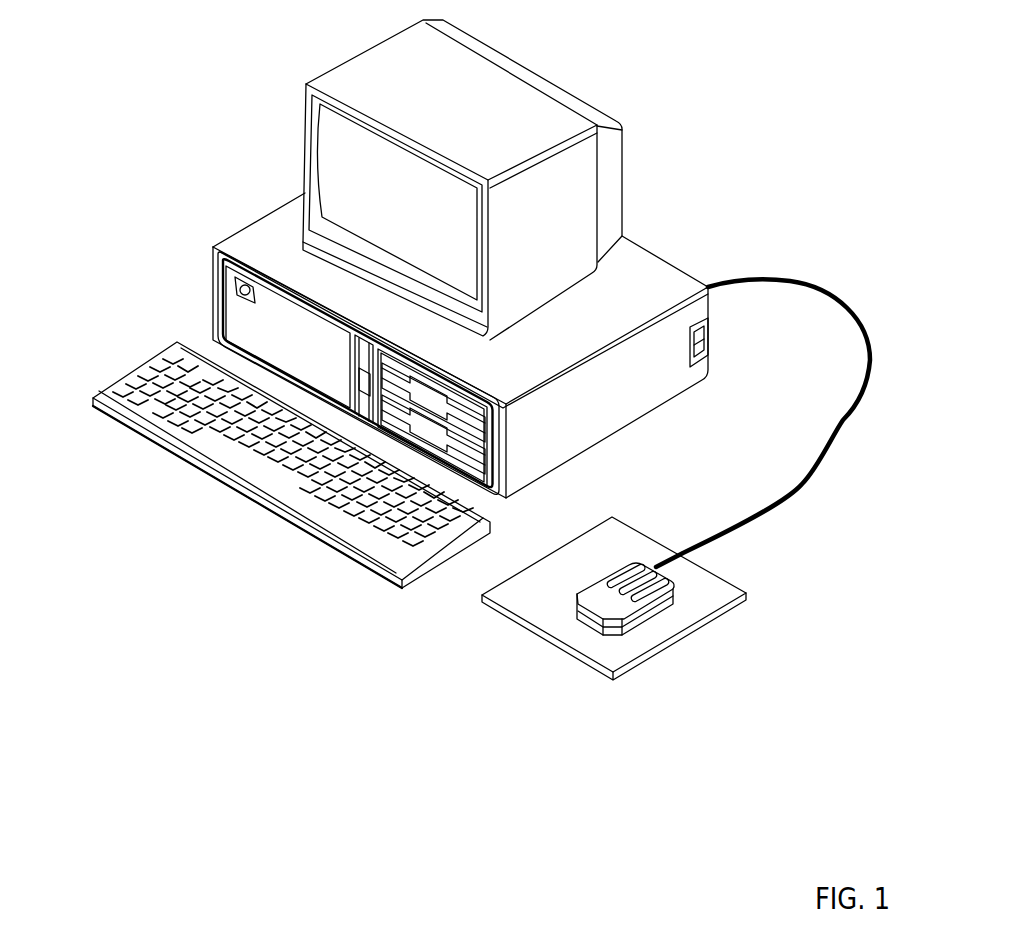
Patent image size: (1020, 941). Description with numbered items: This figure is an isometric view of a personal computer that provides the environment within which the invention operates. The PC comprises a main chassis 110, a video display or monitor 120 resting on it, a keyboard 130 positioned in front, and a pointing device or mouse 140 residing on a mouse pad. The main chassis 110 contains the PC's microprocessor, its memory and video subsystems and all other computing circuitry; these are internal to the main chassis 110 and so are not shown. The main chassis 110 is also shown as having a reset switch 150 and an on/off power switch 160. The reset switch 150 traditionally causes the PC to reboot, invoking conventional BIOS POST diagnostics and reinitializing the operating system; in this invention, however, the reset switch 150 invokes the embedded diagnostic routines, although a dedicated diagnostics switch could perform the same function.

The main chassis 110 is at (653, 267).
The video display or monitor 120 is at (512, 75).
The keyboard 130 is at (110, 397).
The pointing device or mouse 140 is at (652, 597).
The reset switch 150 is at (235, 283).
The on/off power switch 160 is at (700, 333).